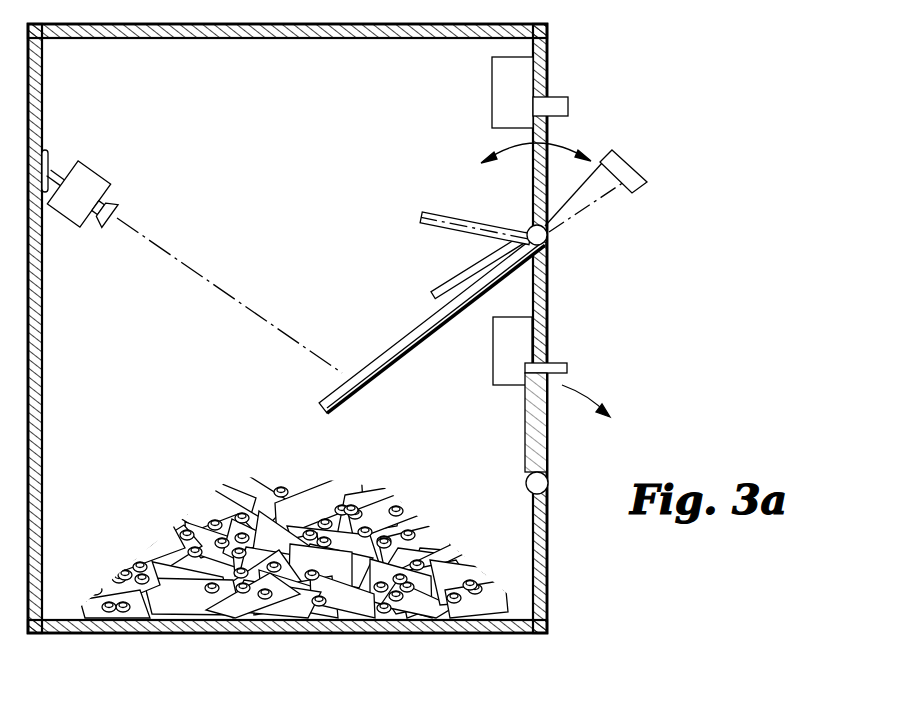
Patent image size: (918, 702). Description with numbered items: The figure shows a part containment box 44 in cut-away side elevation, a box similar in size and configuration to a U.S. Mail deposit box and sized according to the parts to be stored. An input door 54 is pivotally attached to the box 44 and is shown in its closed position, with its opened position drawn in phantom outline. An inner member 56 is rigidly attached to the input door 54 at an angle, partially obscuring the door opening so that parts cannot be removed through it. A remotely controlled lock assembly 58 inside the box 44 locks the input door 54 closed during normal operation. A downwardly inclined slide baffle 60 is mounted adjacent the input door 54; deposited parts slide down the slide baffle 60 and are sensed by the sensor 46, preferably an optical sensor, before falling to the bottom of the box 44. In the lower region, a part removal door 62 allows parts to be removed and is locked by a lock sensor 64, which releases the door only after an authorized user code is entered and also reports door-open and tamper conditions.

The part containment box 44 is at (663, 255).
The sensor 46 is at (84, 178).
The input door 54 is at (549, 104).
The inner member 56 is at (477, 282).
The lock assembly 58 is at (529, 67).
The slide baffle 60 is at (443, 323).
The part removal door 62 is at (558, 369).
The lock sensor 64 is at (517, 333).